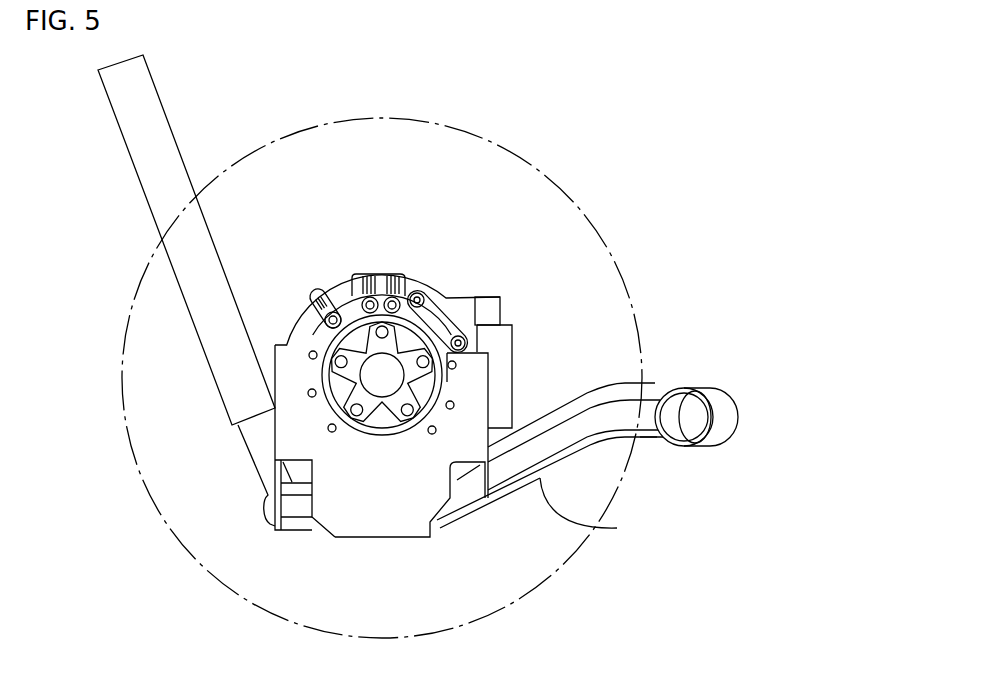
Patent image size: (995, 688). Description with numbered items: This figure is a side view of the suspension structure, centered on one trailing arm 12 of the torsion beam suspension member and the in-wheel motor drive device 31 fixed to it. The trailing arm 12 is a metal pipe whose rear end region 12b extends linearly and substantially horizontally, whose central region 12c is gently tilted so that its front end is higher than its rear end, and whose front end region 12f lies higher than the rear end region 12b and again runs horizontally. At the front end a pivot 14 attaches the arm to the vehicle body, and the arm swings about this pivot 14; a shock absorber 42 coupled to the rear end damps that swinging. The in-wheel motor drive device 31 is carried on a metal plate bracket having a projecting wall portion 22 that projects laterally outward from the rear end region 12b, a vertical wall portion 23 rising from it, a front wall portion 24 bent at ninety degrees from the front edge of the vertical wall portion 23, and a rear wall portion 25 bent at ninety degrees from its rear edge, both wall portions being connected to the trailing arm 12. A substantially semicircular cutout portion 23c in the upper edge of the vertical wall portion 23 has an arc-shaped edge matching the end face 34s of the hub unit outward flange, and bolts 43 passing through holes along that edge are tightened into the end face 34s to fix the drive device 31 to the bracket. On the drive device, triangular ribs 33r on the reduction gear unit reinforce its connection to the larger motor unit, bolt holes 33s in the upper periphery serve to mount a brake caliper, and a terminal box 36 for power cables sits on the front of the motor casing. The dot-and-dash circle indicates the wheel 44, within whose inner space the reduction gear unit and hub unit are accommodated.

The trailing arm 12 is at (559, 395).
The rear end region 12b is at (308, 533).
The central region 12c is at (617, 528).
The front end region 12f is at (653, 440).
The pivot 14 is at (722, 420).
The projecting wall portion 22 is at (387, 538).
The vertical wall portion 23 is at (302, 352).
The cutout portion 23c is at (428, 335).
The front wall portion 24 is at (512, 387).
The rear wall portion 25 is at (275, 345).
The in-wheel motor drive device 31 is at (383, 273).
The triangular ribs 33r is at (345, 315).
The bolt holes 33s is at (418, 293).
The end face 34s is at (347, 282).
The terminal box 36 is at (512, 348).
The shock absorber 42 is at (127, 142).
The bolts 43 is at (332, 435).
The wheel 44 is at (122, 378).